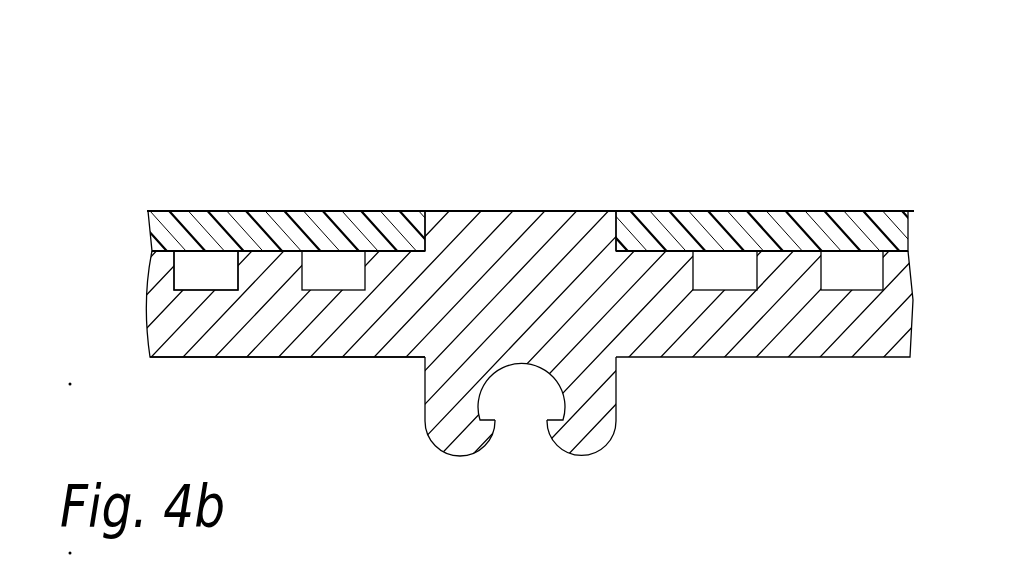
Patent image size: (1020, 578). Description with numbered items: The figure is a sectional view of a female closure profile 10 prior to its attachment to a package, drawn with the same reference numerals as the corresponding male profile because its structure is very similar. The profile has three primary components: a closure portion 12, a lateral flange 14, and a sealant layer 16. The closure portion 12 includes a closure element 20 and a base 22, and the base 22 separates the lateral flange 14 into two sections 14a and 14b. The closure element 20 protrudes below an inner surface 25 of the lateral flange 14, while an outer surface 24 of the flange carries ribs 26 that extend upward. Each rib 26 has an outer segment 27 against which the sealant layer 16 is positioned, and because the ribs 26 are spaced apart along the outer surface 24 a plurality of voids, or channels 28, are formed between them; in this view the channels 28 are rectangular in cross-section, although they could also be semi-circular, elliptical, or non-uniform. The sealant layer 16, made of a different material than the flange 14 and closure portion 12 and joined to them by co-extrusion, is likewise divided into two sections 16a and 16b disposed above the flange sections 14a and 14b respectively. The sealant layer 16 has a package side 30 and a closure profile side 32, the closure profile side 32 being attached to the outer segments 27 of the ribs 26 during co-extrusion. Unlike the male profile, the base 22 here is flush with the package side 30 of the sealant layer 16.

The female closure profile 10 is at (311, 122).
The closure portion 12 is at (413, 378).
The lateral flange 14 is at (123, 315).
The lateral flange section 14a is at (733, 330).
The lateral flange section 14b is at (192, 330).
The sealant layer 16 is at (123, 230).
The sealant layer section 16a is at (680, 211).
The sealant layer section 16b is at (183, 211).
The closure element 20 is at (619, 427).
The base 22 is at (538, 211).
The outer surface 24 is at (208, 290).
The inner surface 25 is at (237, 358).
The rib 26 is at (162, 270).
The outer segment 27 is at (393, 253).
The channel 28 is at (326, 263).
The package side 30 is at (382, 211).
The closure profile side 32 is at (265, 247).